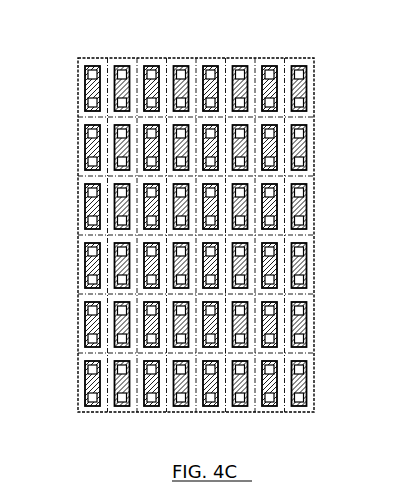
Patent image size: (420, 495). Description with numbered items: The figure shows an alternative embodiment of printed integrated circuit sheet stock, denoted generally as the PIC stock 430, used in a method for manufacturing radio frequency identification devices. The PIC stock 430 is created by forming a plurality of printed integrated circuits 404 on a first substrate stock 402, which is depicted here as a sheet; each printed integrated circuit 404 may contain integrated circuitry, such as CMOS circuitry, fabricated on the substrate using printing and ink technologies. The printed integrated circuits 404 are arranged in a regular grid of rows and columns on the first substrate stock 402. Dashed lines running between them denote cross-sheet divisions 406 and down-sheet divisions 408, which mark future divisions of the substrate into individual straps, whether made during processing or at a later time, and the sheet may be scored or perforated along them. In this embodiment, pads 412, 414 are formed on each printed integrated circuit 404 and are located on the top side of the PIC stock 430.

The PIC stock 430 is at (204, 37).
The first substrate stock 402 is at (316, 102).
The printed integrated circuit 404 is at (310, 136).
The cross-sheet division 406 is at (272, 180).
The down-sheet division 408 is at (310, 264).
The pad 412 is at (344, 304).
The pad 414 is at (344, 348).